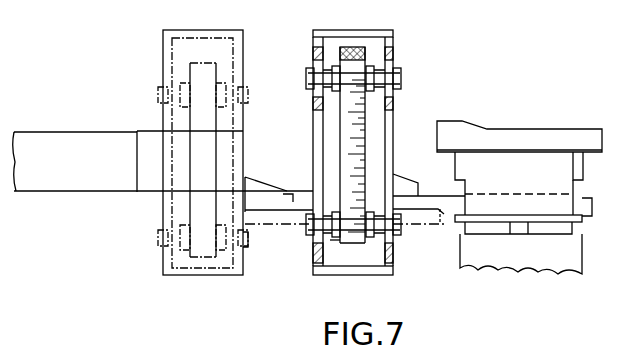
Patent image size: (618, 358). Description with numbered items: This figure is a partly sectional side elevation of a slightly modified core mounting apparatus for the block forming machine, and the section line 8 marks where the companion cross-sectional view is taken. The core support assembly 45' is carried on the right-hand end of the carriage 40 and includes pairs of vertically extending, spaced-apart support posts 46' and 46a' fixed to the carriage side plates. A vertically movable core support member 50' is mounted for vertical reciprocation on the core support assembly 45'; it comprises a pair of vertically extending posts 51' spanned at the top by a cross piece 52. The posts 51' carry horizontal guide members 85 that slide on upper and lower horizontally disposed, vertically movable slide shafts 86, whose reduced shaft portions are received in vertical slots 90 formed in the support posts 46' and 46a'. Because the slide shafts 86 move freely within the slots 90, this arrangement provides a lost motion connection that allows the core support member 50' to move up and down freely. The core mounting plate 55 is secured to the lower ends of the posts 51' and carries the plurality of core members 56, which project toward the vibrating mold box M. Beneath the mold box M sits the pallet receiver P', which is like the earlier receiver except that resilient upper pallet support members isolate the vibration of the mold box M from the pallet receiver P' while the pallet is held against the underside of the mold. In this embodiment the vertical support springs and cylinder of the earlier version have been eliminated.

The carriage 40 is at (90, 126).
The vertically extending posts 51' is at (251, 152).
The core support assembly 45' is at (392, 157).
The support post 46' is at (296, 151).
The support post 46a' is at (420, 151).
The core support member 50' is at (385, 128).
The cross piece 52 is at (356, 50).
The slide shafts 86 is at (330, 68).
The horizontal guide members 85 is at (394, 60).
The vertical slots 90 is at (323, 239).
The core mounting plate 55 is at (393, 172).
The mold box M is at (578, 130).
The core members 56 is at (585, 199).
The pallet receiver P' is at (521, 254).
The section line 8 is at (289, 217).